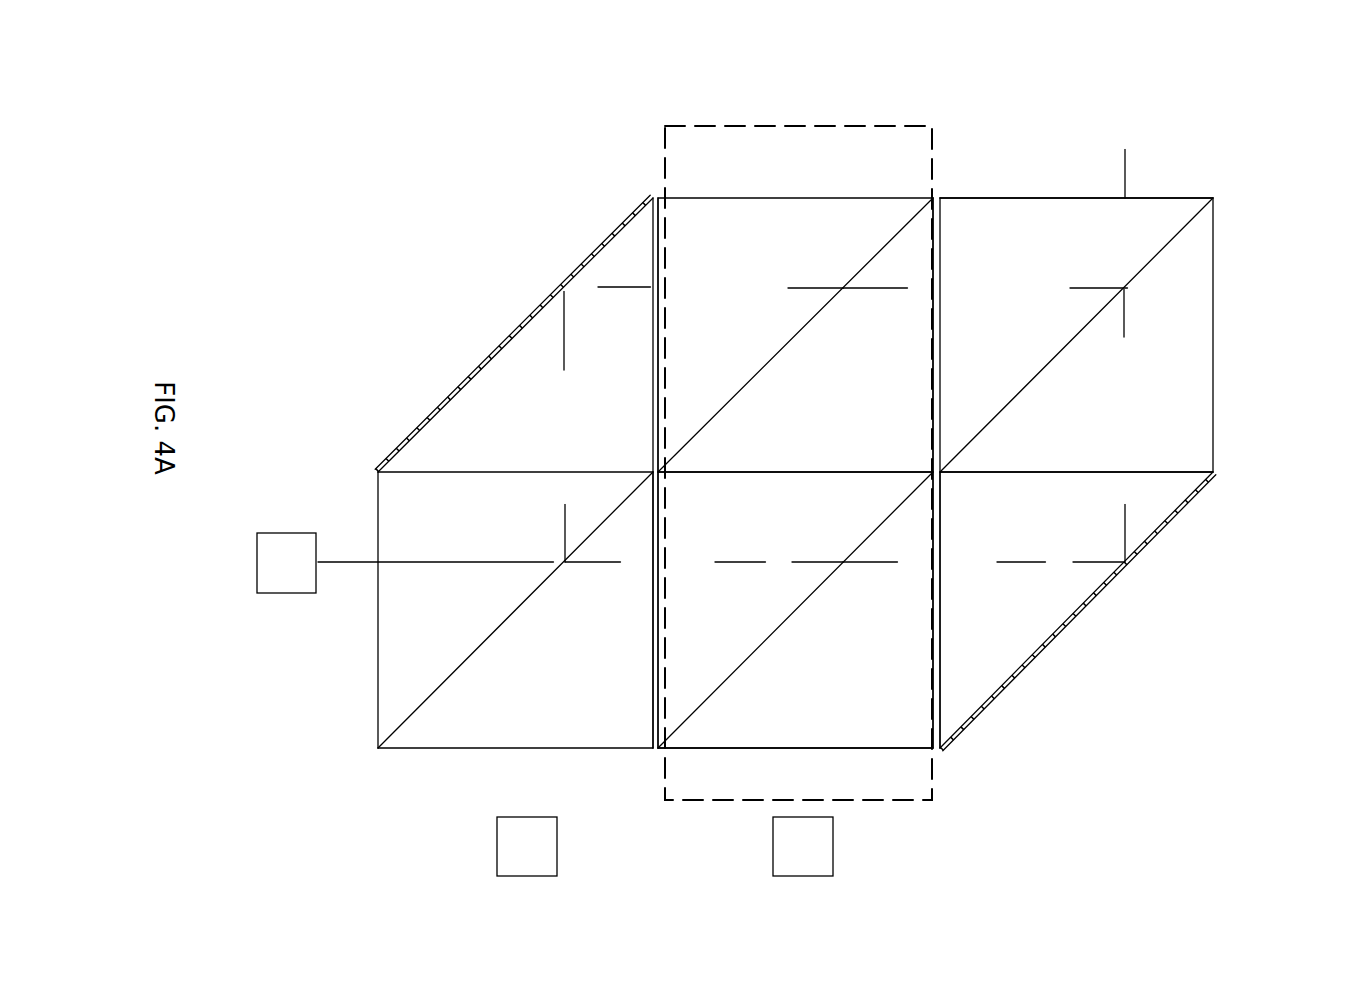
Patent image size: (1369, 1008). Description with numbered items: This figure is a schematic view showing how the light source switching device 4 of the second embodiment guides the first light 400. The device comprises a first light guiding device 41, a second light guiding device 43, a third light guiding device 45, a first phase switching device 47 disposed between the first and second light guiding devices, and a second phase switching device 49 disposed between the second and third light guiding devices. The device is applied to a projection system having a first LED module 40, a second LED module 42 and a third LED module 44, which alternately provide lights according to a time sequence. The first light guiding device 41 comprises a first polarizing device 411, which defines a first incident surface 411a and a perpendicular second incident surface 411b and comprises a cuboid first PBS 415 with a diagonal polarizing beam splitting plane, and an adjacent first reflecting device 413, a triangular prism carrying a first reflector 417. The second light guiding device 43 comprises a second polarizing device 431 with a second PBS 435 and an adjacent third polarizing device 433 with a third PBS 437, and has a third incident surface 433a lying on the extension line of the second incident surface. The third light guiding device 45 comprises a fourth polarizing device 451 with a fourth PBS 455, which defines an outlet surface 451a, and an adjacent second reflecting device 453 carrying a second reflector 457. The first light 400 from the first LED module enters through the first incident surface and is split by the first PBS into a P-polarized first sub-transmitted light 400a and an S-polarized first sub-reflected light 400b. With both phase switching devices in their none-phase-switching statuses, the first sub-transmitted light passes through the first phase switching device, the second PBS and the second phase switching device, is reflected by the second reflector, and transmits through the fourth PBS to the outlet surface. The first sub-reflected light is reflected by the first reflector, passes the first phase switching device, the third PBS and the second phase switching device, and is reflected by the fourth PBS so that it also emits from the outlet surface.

The light source switching device 4 is at (938, 98).
The first light emitting diode module 40 is at (272, 593).
The first light guiding device 41 is at (257, 372).
The first polarizing device 411 is at (383, 662).
The first incident surface 411a is at (378, 522).
The second incident surface 411b is at (533, 748).
The first reflecting device 413 is at (436, 432).
The first PBS 415 is at (423, 713).
The first reflector 417 is at (505, 340).
The second LED module 42 is at (557, 848).
The second light guiding device 43 is at (740, 126).
The second polarizing device 431 is at (772, 728).
The third polarizing device 433 is at (788, 218).
The third incident surface 433a is at (840, 750).
The second PBS 435 is at (690, 712).
The third PBS 437 is at (883, 245).
The third LED module 44 is at (833, 848).
The third light guiding device 45 is at (1274, 270).
The fourth polarizing device 451 is at (1186, 322).
The outlet surface 451a is at (1149, 194).
The second reflecting device 453 is at (1167, 494).
The fourth PBS 455 is at (1171, 233).
The second reflector 457 is at (1032, 655).
The first phase switching device 47 is at (652, 197).
The second phase switching device 49 is at (937, 197).
The first light 400 is at (476, 562).
The first sub-transmitted light 400a is at (578, 564).
The first sub-reflected light 400b is at (560, 545).